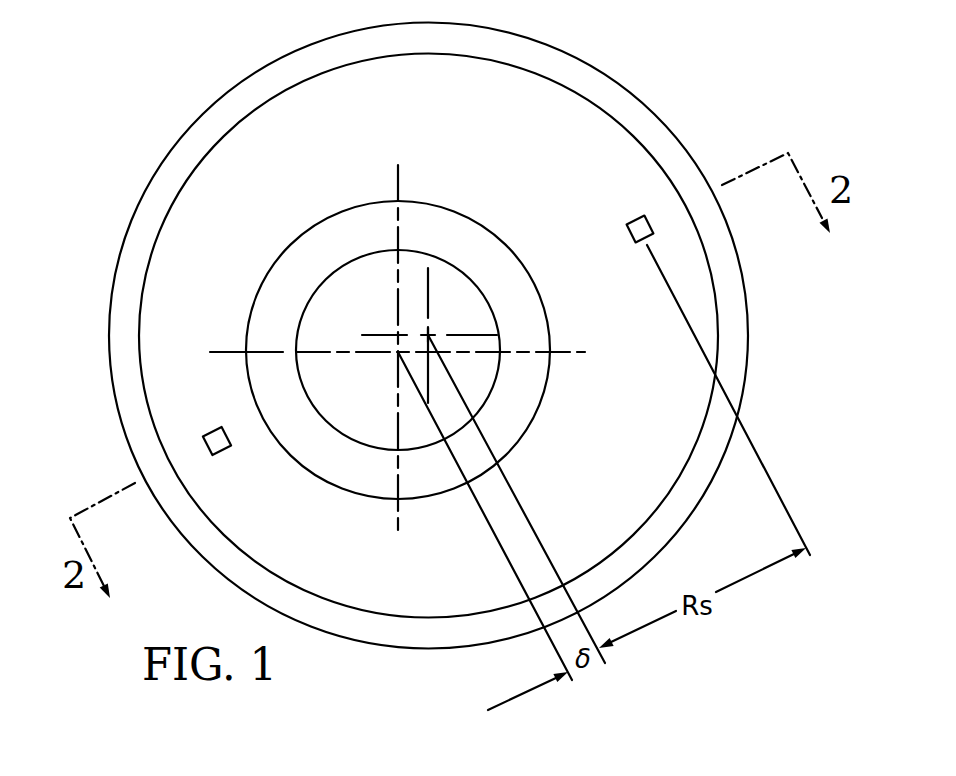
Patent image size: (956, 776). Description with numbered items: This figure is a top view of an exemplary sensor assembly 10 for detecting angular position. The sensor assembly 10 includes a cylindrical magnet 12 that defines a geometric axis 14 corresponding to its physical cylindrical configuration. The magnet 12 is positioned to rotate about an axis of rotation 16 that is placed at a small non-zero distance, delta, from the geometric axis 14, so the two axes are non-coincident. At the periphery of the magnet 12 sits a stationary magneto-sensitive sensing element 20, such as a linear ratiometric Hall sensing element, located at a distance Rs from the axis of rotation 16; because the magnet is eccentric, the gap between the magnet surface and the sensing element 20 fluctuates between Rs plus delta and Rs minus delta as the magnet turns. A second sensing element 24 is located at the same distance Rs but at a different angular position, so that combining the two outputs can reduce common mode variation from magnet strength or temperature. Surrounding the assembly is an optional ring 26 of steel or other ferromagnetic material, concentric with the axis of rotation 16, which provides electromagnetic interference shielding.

The sensor assembly 10 is at (190, 55).
The cylindrical magnet 12 is at (460, 232).
The geometric axis 14 is at (398, 352).
The axis of rotation 16 is at (428, 335).
The magneto-sensitive sensing element 20 is at (650, 220).
The sensing element 24 is at (208, 432).
The ring 26 is at (737, 310).